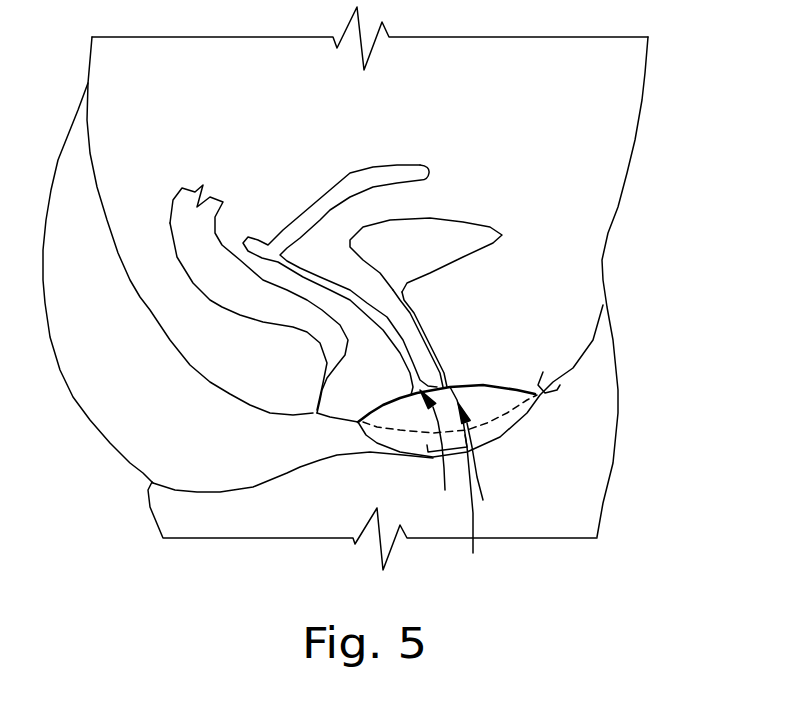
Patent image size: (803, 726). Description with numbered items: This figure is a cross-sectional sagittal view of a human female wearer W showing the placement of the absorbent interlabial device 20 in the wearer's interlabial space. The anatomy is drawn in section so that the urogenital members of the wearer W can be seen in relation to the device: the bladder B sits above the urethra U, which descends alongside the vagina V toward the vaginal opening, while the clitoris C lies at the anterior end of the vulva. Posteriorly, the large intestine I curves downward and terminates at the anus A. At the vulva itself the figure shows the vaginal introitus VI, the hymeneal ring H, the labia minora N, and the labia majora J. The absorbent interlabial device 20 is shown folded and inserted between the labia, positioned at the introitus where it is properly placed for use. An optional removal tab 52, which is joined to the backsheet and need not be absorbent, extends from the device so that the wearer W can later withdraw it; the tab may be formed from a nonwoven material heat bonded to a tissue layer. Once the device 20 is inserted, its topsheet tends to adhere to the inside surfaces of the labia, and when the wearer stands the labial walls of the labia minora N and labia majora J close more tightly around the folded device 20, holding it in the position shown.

The wearer W is at (620, 105).
The bladder B is at (470, 236).
The vagina V is at (393, 335).
The urethra U is at (433, 343).
The clitoris C is at (543, 372).
The large intestine I is at (216, 273).
The anus A is at (315, 418).
The labia minora N is at (492, 424).
The labia majora J is at (483, 433).
The removal tab 52 is at (427, 447).
The vaginal introitus VI is at (445, 490).
The absorbent interlabial device 20 is at (483, 500).
The hymeneal ring H is at (473, 553).